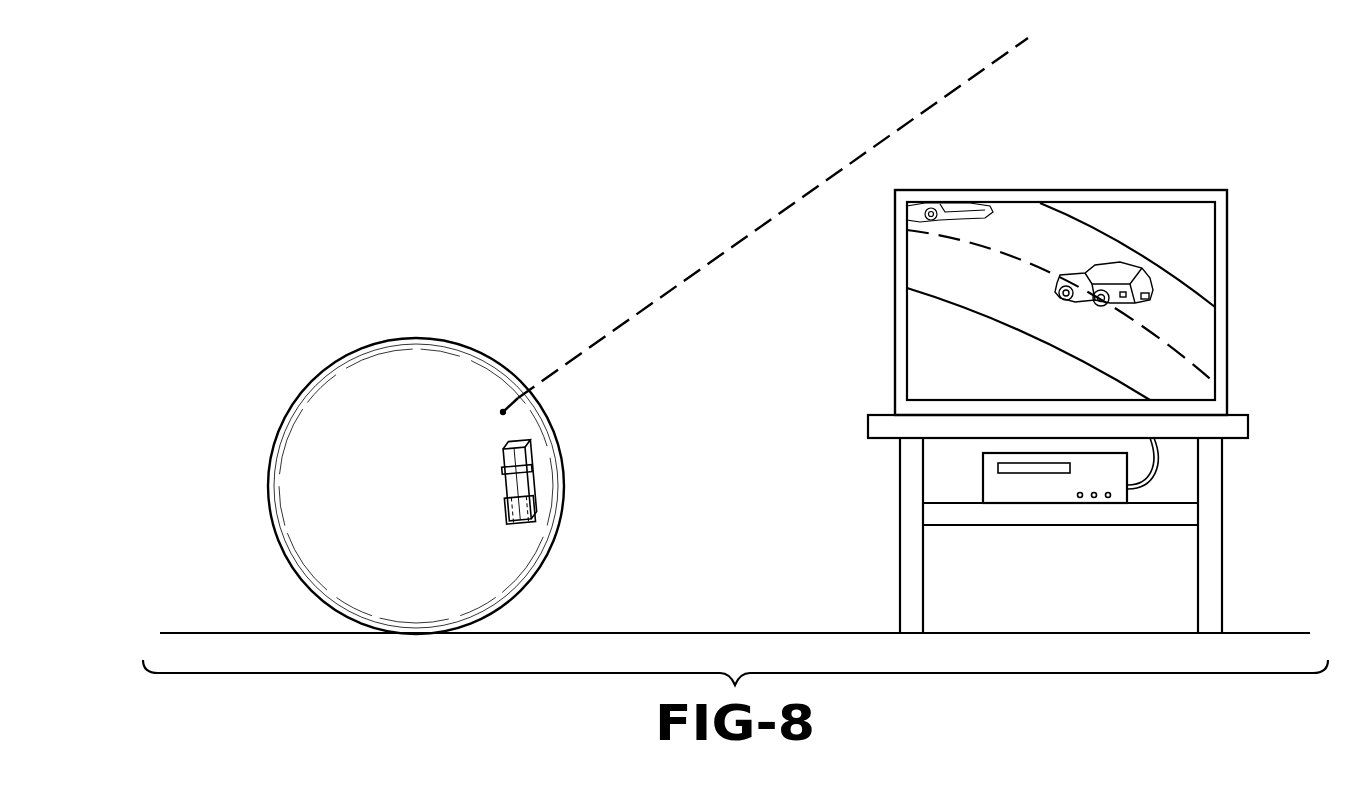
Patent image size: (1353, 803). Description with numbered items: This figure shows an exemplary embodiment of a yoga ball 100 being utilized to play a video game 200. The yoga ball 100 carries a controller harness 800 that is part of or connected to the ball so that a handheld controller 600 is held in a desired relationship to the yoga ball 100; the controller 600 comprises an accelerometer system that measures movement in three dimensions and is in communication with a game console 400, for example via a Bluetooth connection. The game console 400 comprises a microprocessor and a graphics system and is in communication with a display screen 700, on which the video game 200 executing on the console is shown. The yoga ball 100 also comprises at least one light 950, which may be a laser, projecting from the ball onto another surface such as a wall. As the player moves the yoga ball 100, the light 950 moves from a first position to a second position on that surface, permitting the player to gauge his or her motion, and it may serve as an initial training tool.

The yoga ball 100 is at (355, 390).
The video game 200 is at (1123, 217).
The game console 400 is at (1042, 488).
The handheld controller 600 is at (527, 452).
The display screen 700 is at (895, 315).
The controller harness 800 is at (530, 520).
The light 950 is at (502, 408).